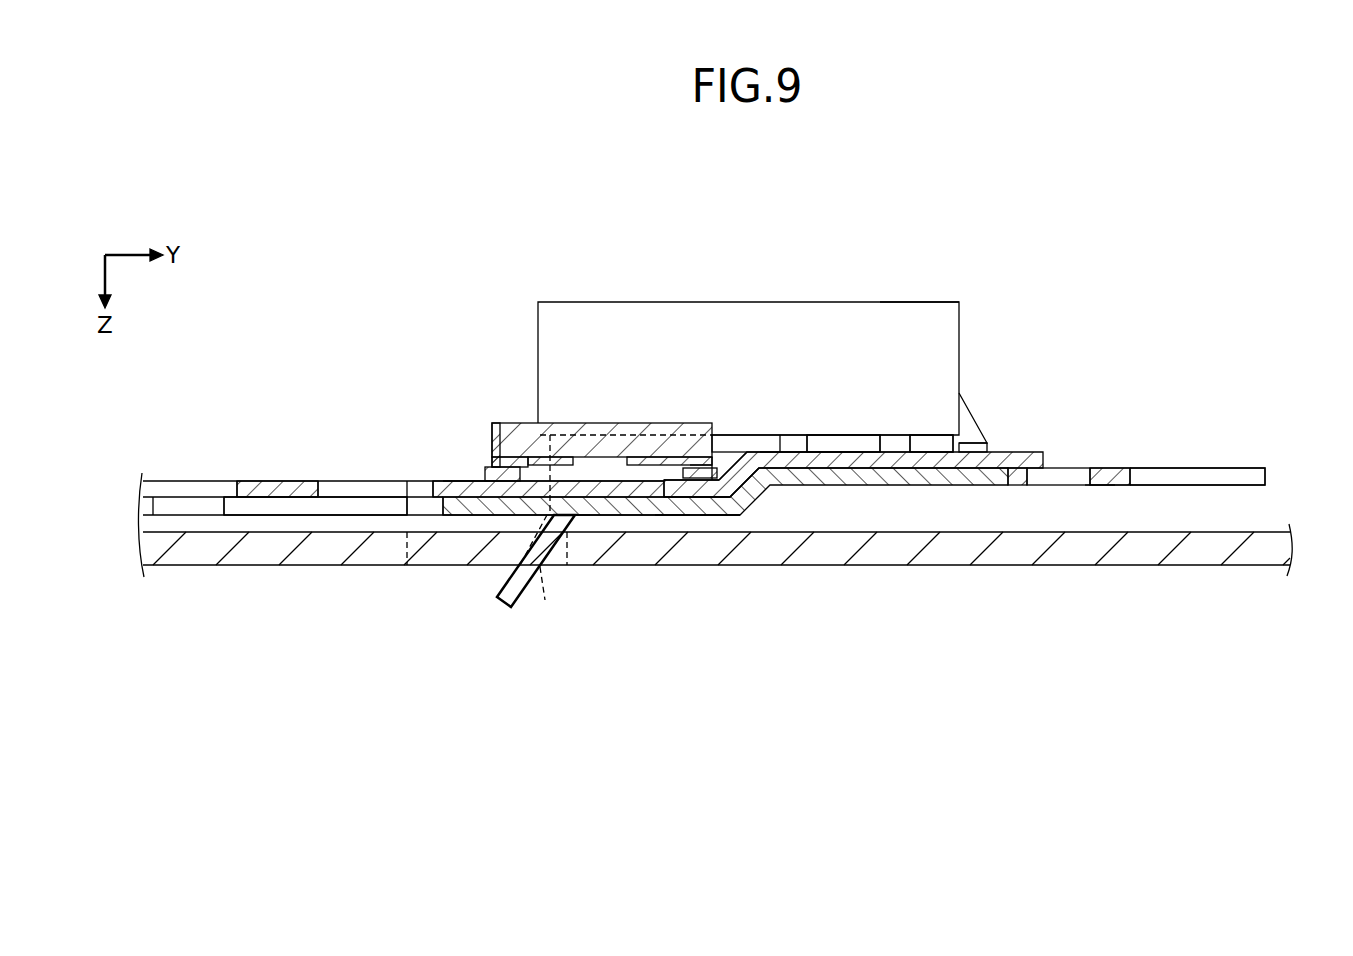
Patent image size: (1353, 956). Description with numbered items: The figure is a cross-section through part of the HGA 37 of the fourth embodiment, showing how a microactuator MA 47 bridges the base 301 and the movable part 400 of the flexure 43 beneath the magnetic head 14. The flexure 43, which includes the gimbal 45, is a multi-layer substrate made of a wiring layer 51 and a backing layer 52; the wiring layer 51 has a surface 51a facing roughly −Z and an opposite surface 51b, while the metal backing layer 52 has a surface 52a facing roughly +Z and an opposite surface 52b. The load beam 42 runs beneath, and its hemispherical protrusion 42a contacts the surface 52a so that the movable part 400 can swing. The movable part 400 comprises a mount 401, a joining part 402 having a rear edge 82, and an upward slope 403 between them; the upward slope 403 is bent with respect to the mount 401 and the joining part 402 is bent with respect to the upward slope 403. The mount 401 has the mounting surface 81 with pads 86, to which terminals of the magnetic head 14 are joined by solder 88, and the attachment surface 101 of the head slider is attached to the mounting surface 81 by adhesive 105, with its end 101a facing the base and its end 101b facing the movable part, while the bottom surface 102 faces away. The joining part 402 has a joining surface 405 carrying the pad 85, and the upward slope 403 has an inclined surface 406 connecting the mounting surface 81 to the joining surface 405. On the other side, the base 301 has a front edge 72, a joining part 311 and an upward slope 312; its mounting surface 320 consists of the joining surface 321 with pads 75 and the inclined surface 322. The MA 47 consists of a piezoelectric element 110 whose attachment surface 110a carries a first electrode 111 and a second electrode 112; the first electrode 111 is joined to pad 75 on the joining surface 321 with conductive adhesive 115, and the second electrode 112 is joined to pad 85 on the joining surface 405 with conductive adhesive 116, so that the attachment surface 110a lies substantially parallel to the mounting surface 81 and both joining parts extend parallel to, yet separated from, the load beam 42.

The magnetic head 14 is at (748, 338).
The HGA 37 is at (1220, 363).
The load beam 42 is at (1017, 550).
The protrusion 42a is at (807, 452).
The flexure 43 is at (1220, 447).
The gimbal 45 is at (1247, 464).
The microactuator 47 is at (593, 345).
The wiring layer 51 is at (441, 526).
The surface 51a is at (253, 481).
The surface 51b is at (293, 500).
The backing layer 52 is at (1168, 519).
The surface 52a is at (1100, 486).
The surface 52b is at (1121, 468).
The front edge 72 is at (669, 519).
The pad 75 is at (470, 480).
The mounting surface 81 is at (1006, 468).
The rear edge 82 is at (632, 450).
The pad 85 is at (698, 460).
The pad 86 is at (985, 443).
The solder 88 is at (972, 443).
The attachment surface 101 is at (851, 532).
The end 101a is at (547, 532).
The end 101b is at (952, 440).
The bottom surface 102 is at (913, 302).
The adhesive 105 is at (832, 446).
The piezoelectric element 110 is at (592, 440).
The attachment surface 110a is at (575, 500).
The first electrode 111 is at (502, 498).
The second electrode 112 is at (715, 518).
The conductive adhesive 115 is at (488, 470).
The conductive adhesive 116 is at (726, 460).
The base 301 is at (503, 460).
The joining part 311 is at (436, 477).
The upward slope 312 is at (725, 574).
The mounting surface 320 is at (412, 428).
The joining surface 321 is at (457, 480).
The inclined surface 322 is at (627, 445).
The movable part 400 is at (891, 461).
The mount 401 is at (891, 461).
The joining part 402 is at (697, 515).
The upward slope 403 is at (755, 503).
The joining surface 405 is at (672, 465).
The inclined surface 406 is at (737, 465).